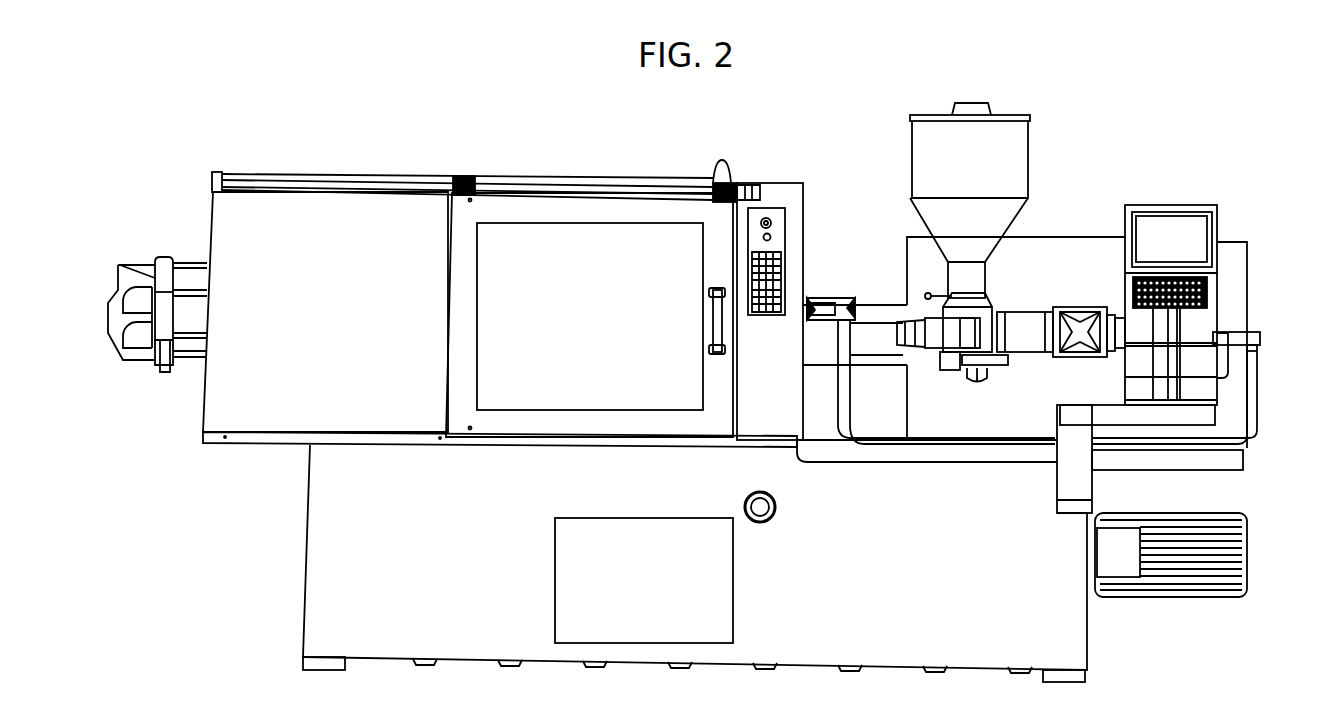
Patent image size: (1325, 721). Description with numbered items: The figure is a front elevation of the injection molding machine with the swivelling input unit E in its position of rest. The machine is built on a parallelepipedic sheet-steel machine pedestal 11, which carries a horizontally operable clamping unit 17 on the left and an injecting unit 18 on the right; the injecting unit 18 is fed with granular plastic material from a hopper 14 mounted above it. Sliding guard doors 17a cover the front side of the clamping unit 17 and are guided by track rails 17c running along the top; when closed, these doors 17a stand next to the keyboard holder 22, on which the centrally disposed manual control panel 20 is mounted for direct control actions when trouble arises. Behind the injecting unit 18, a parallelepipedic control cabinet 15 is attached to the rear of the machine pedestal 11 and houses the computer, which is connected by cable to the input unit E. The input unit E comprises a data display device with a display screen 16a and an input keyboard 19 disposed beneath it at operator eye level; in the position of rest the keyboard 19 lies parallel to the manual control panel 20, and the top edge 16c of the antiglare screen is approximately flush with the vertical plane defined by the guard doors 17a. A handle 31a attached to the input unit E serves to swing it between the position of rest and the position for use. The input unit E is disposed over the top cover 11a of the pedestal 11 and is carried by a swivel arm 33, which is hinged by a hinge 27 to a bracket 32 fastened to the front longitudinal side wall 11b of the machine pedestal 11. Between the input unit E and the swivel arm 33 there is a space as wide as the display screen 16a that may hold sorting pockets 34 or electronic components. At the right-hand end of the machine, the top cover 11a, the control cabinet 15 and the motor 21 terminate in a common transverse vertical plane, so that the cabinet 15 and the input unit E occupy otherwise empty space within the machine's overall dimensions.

The machine pedestal 11 is at (306, 585).
The top cover 11a is at (1190, 463).
The front longitudinal side wall 11b is at (858, 588).
The hopper 14 is at (916, 143).
The control cabinet 15 is at (1070, 238).
The display screen 16a is at (1188, 249).
The top edge 16c is at (1187, 205).
The input unit E is at (1210, 200).
The clamping unit 17 is at (261, 445).
The sliding guard doors 17a is at (548, 415).
The track rails 17c is at (350, 182).
The injecting unit 18 is at (887, 304).
The input keyboard 19 is at (1213, 283).
The manual control panel 20 is at (787, 262).
The motor 21 is at (1168, 565).
The keyboard holder 22 is at (780, 196).
The hinge 27 is at (1055, 426).
The handle 31a is at (1232, 335).
The bracket 32 is at (1062, 482).
The swivel arm 33 is at (1100, 412).
The sorting pockets 34 is at (1180, 385).